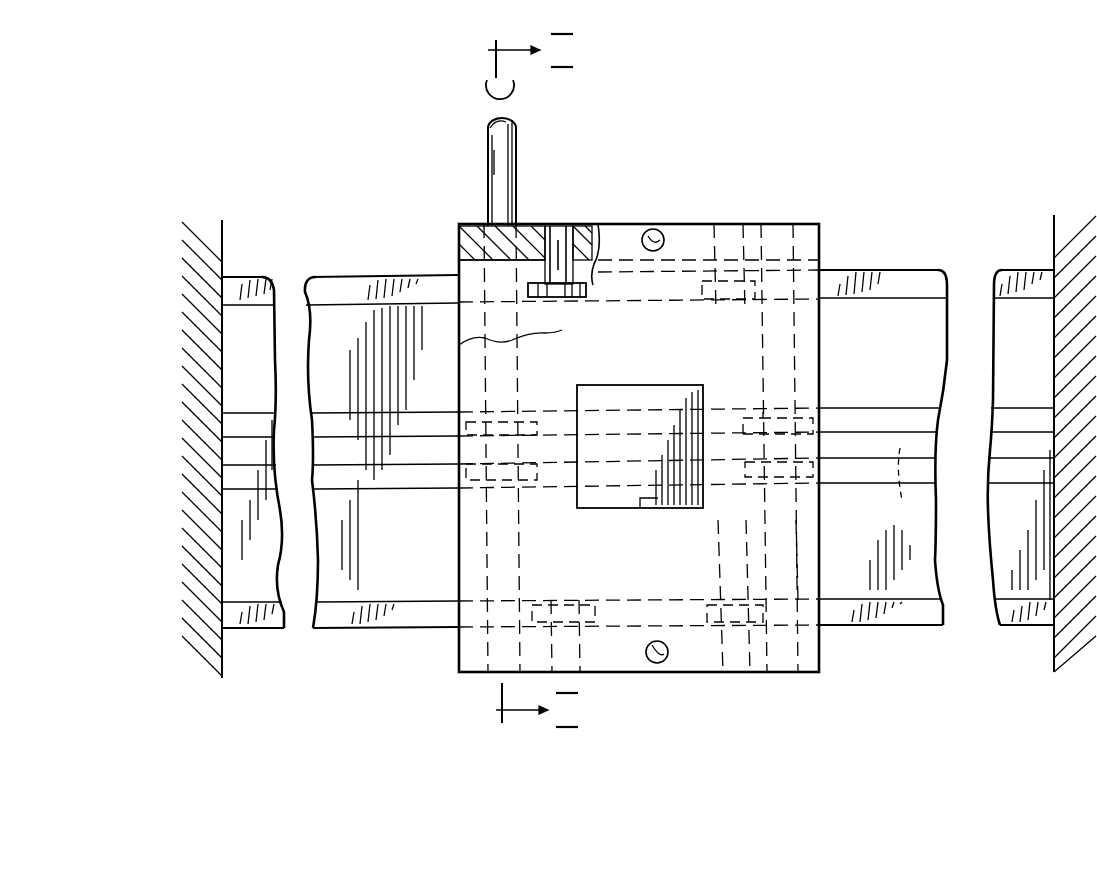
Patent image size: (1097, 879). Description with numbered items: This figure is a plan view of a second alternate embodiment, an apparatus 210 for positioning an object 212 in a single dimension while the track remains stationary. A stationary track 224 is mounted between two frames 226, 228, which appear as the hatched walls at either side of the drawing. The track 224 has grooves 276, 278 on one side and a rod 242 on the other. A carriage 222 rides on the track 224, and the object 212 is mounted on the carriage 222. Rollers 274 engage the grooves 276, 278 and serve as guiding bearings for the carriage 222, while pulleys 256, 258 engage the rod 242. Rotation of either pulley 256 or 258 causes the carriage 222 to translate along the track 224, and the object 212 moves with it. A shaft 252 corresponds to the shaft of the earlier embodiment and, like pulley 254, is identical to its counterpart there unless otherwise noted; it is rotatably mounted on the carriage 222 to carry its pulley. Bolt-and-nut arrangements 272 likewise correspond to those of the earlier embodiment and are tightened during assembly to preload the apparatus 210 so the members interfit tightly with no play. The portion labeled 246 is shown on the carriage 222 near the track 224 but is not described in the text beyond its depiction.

The apparatus 210 is at (848, 157).
The object 212 is at (641, 500).
The carriage 222 is at (826, 646).
The stationary track 224 is at (881, 315).
The frame 226 is at (222, 265).
The frame 228 is at (1054, 245).
The rod 242 is at (908, 489).
The carriage edge portion 246 is at (808, 553).
The shaft 252 is at (500, 198).
The pulley 254 is at (785, 395).
The pulley 256 is at (455, 400).
The pulley 258 is at (818, 405).
The bolt-and-nut arrangement 272 is at (660, 235).
The rollers 274 is at (565, 299).
The groove 276 is at (365, 297).
The groove 278 is at (388, 640).